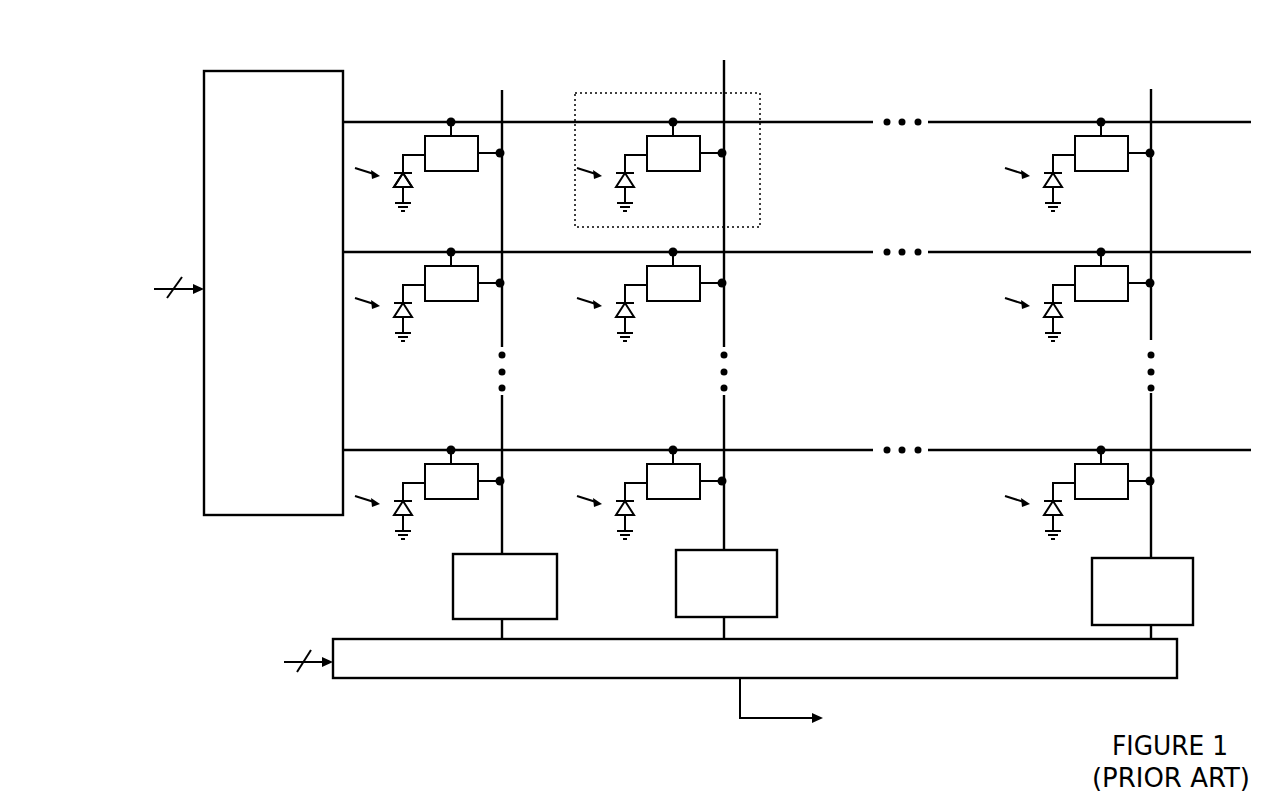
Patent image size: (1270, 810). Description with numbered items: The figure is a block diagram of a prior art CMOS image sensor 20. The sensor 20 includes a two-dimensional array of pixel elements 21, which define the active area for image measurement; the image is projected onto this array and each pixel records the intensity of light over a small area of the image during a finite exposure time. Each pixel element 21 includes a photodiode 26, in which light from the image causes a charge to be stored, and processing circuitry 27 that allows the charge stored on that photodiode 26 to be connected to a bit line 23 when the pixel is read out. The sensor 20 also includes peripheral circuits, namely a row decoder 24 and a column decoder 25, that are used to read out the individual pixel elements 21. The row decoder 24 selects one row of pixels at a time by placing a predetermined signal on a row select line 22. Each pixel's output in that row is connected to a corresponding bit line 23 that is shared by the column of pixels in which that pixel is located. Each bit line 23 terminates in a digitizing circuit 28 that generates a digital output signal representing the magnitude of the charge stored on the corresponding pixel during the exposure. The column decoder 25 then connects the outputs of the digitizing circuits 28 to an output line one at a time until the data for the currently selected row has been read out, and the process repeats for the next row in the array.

The CMOS image sensor 20 is at (132, 62).
The pixel element 21 is at (636, 93).
The row select line 22 is at (808, 122).
The bit line 23 is at (502, 428).
The row decoder 24 is at (838, 639).
The column decoder 25 is at (285, 71).
The photodiode 26 is at (412, 176).
The processing circuitry 27 is at (437, 140).
The digitizing circuit 28 is at (453, 588).